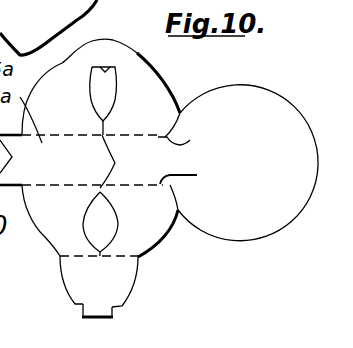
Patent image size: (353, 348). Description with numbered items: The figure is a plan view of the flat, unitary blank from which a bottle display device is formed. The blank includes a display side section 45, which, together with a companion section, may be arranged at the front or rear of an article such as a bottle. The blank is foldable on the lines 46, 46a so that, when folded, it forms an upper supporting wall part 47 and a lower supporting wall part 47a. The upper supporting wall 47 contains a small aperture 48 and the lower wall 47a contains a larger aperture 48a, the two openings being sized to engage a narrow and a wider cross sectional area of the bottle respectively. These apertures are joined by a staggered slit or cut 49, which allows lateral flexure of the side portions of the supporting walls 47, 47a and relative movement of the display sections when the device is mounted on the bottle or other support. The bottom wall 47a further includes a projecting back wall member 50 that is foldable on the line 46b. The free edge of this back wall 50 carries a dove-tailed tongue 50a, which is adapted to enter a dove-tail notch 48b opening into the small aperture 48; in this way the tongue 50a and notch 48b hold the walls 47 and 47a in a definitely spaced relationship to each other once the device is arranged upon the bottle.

The side section 45 is at (241, 92).
The fold line 46 is at (190, 140).
The fold line 46a is at (197, 175).
The fold line 46b is at (117, 256).
The upper supporting wall part 47 is at (157, 90).
The lower supporting wall part 47a is at (155, 237).
The small aperture 48 is at (117, 93).
The larger aperture 48a is at (82, 227).
The dove-tail notch 48b is at (107, 68).
The staggered slit 49 is at (104, 147).
The projecting back wall member 50 is at (133, 296).
The dove-tailed tongue 50a is at (115, 317).